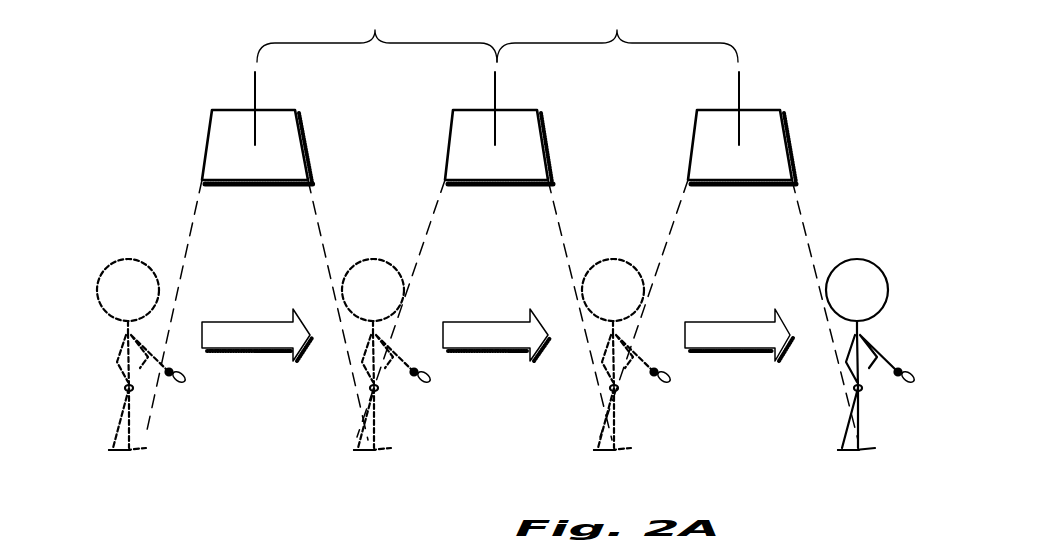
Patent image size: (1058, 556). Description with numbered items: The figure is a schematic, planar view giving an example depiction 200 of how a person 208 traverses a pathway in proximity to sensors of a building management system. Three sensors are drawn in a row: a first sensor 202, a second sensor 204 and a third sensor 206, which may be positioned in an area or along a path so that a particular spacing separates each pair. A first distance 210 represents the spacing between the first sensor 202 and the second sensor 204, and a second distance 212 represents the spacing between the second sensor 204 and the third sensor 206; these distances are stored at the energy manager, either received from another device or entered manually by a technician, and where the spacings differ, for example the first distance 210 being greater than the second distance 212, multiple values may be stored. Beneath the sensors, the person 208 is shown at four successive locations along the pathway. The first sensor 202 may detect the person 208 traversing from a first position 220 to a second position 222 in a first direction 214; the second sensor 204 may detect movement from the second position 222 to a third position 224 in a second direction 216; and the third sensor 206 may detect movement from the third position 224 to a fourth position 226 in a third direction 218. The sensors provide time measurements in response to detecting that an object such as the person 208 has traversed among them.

The depiction 200 is at (150, 36).
The first sensor 202 is at (225, 108).
The second sensor 204 is at (467, 108).
The third sensor 206 is at (717, 108).
The person 208 is at (125, 388).
The first distance 210 is at (375, 32).
The second distance 212 is at (617, 32).
The first direction 214 is at (278, 321).
The second direction 216 is at (520, 321).
The third direction 218 is at (763, 321).
The first position 220 is at (131, 453).
The second position 222 is at (374, 453).
The third position 224 is at (614, 453).
The fourth position 226 is at (857, 453).